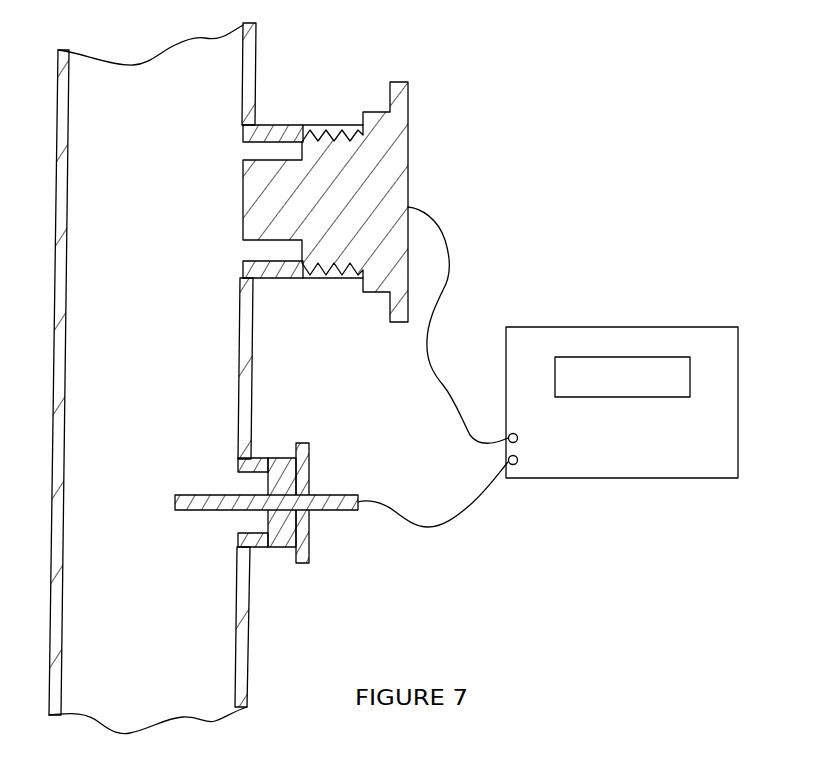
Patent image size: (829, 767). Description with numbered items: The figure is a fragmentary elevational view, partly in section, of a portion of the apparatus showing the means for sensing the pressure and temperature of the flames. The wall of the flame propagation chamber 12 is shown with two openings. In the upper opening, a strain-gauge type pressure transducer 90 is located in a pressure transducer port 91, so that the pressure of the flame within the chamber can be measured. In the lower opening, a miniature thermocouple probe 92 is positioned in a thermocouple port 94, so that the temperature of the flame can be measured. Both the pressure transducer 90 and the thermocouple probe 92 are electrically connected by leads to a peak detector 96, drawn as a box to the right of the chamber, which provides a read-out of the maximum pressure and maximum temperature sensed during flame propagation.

The flame propagation chamber 12 is at (62, 328).
The pressure transducer 90 is at (398, 162).
The pressure transducer port 91 is at (283, 123).
The thermocouple probe 92 is at (342, 494).
The thermocouple port 94 is at (257, 456).
The peak detector 96 is at (592, 340).